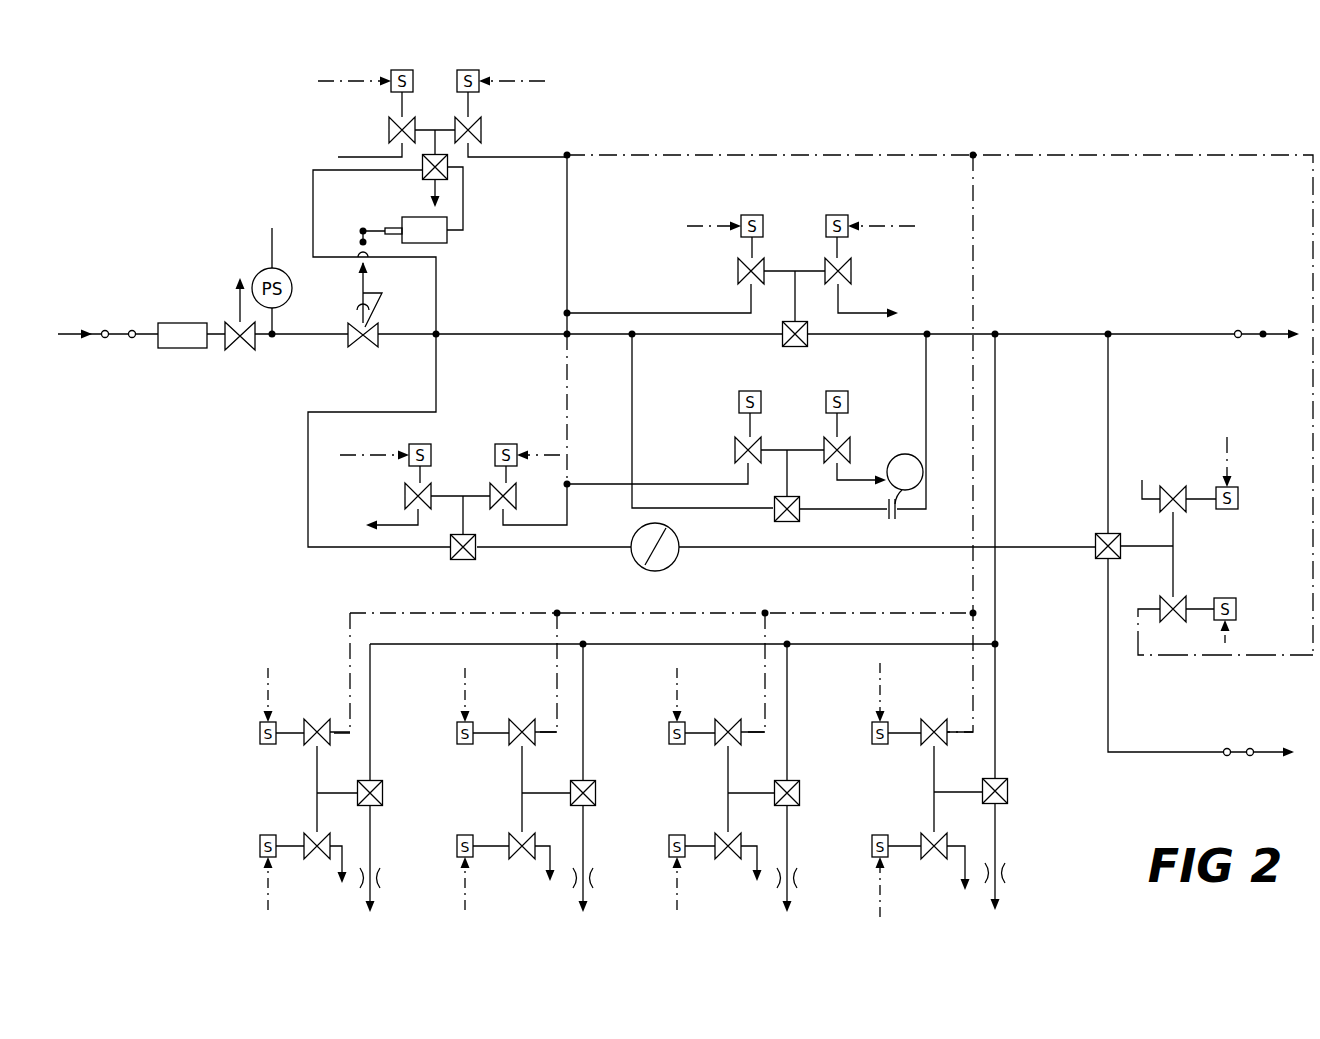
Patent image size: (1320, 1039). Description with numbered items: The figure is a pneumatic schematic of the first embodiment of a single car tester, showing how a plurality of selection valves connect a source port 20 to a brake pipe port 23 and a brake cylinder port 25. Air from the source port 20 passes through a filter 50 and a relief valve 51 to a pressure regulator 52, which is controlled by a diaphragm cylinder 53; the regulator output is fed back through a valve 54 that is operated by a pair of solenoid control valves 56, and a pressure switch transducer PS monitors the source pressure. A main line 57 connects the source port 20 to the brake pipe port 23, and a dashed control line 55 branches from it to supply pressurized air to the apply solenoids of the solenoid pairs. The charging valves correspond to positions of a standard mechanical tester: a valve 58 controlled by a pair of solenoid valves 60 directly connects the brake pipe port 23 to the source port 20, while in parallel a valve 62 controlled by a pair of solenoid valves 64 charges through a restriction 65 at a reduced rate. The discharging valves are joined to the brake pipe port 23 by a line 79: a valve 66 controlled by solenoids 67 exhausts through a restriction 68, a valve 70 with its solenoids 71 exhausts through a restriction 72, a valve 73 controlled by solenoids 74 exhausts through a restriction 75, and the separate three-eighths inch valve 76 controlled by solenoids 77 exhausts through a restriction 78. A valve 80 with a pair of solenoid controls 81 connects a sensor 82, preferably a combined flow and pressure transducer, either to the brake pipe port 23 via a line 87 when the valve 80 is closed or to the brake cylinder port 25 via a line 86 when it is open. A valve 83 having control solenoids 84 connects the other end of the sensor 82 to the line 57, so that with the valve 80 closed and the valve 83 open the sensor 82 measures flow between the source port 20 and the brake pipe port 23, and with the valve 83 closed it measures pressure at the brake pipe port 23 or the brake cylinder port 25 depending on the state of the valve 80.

The source port 20 is at (73, 337).
The brake pipe port 23 is at (1272, 337).
The brake cylinder port 25 is at (1267, 755).
The filter 50 is at (195, 348).
The relief valve 51 is at (251, 348).
The pressure regulator 52 is at (348, 325).
The diaphragm cylinder 53 is at (447, 243).
The valve 54 is at (423, 173).
The dash line 55 is at (567, 313).
The pair of solenoid control valves 56 is at (441, 68).
The line 57 is at (522, 340).
The valve 58 is at (787, 337).
The pair of solenoid valves 60 is at (783, 214).
The valve 62 is at (797, 515).
The pair of solenoid valves 64 is at (785, 402).
The restriction 65 is at (915, 440).
The valve 66 is at (1007, 800).
The solenoids 67 is at (935, 707).
The restriction 68 is at (1003, 875).
The valve 70 is at (798, 783).
The solenoid valve P5 71 is at (728, 710).
The restriction 72 is at (797, 882).
The valve 73 is at (593, 783).
The solenoids 74 is at (522, 710).
The restriction 75 is at (593, 882).
The valve 76 is at (378, 783).
The solenoids 77 is at (266, 790).
The restriction 78 is at (380, 882).
The line 79 is at (997, 605).
The valve 80 is at (1103, 537).
The pair of solenoid controls 81 is at (1233, 559).
The sensor 82 is at (673, 562).
The valve 83 is at (450, 555).
The control solenoids 84 is at (467, 450).
The line 86 is at (1112, 677).
The line 87 is at (1108, 425).